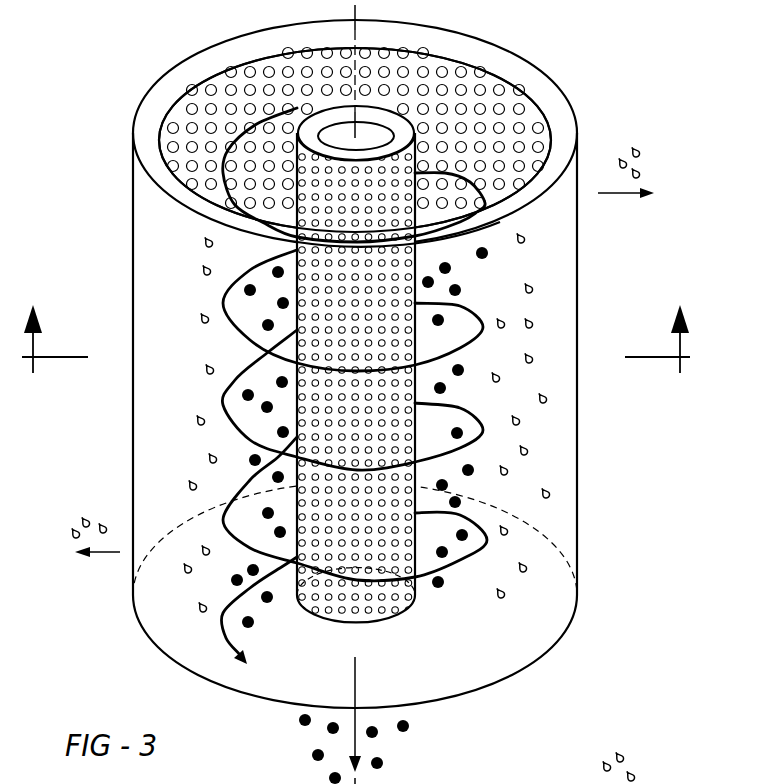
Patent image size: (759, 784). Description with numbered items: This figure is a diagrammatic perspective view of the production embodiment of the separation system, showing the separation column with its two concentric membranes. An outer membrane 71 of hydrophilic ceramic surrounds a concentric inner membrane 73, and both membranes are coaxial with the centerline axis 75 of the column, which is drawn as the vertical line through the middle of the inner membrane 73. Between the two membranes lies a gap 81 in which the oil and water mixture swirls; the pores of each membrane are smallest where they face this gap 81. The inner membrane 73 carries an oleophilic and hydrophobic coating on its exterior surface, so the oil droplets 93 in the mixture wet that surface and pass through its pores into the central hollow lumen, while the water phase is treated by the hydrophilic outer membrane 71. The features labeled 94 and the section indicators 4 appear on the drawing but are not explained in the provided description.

The outer membrane 71 is at (441, 37).
The inner membrane 73 is at (400, 129).
The centerline axis 75 is at (357, 32).
The gap 81 is at (505, 126).
The oil droplets 93 is at (438, 588).
The separated liquid flow 94 is at (72, 536).
The section line 4- 4 is at (356, 317).